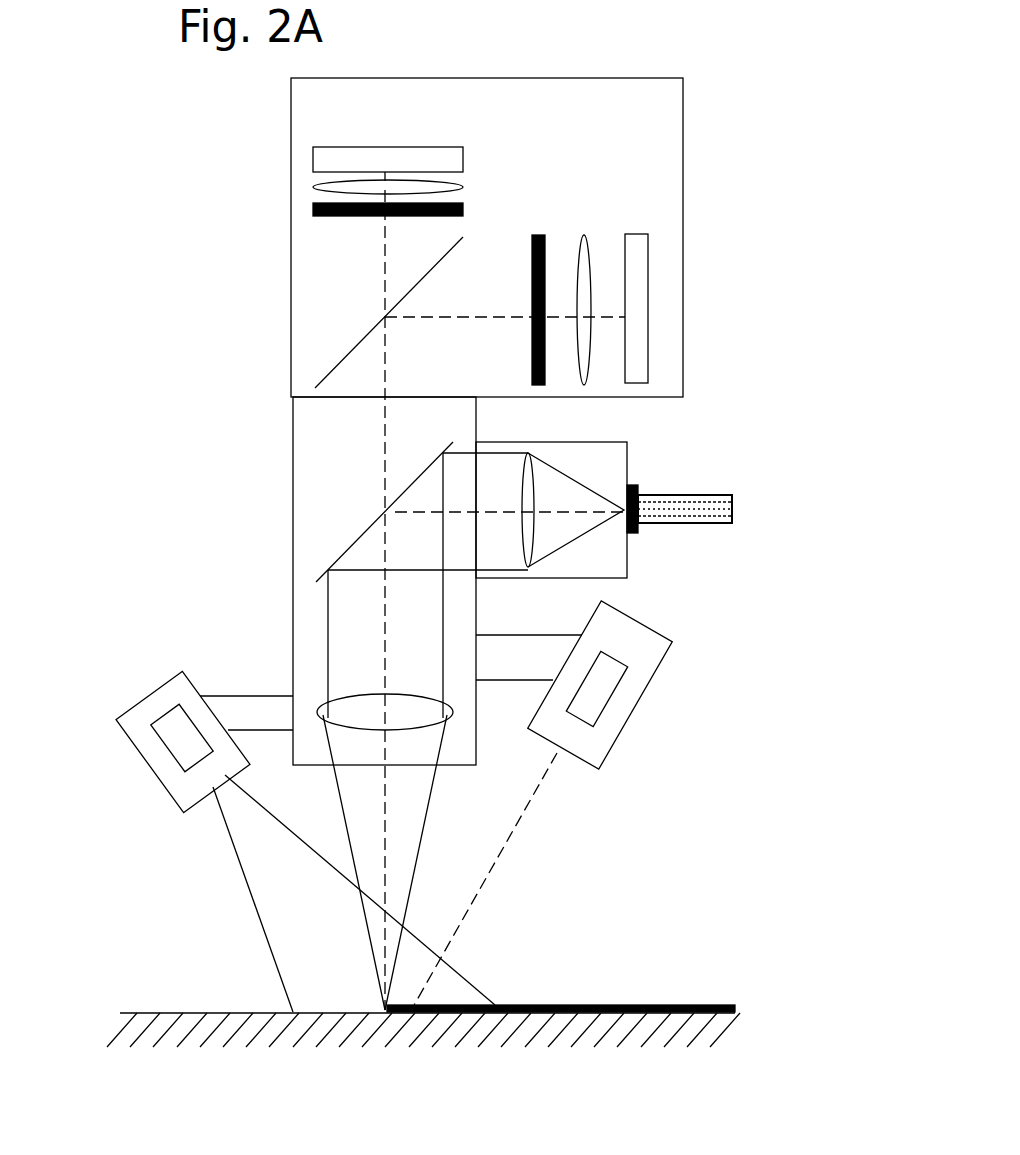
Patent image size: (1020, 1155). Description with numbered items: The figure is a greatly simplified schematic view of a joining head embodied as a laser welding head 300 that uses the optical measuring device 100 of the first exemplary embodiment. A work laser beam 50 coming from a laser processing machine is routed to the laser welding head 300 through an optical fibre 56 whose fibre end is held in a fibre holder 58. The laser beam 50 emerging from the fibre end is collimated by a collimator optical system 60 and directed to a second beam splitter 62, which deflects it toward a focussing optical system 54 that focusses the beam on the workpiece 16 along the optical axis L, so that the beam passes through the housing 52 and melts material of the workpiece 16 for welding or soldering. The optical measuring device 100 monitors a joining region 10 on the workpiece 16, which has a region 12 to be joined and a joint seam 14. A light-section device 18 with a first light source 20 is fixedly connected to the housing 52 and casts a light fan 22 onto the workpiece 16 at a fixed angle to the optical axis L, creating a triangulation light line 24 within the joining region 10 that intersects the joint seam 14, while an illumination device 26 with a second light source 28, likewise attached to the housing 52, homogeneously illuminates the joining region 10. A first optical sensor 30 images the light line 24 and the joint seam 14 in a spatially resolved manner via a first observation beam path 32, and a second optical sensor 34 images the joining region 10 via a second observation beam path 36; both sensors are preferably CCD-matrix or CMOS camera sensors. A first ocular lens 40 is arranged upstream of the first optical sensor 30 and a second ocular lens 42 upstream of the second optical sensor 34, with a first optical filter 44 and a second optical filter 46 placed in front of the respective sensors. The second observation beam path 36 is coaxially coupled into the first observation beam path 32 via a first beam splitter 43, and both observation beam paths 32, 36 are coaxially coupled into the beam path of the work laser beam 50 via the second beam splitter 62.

The joining region 10 is at (476, 944).
The region to be joined 12 is at (193, 1002).
The joint seam 14 is at (667, 1003).
The workpiece 16 is at (700, 1020).
The light-section device 18 is at (653, 640).
The first light source 20 is at (607, 685).
The light fan 22 is at (510, 838).
The triangulation light line 24 is at (417, 1003).
The illumination device 26 is at (148, 745).
The second light source 28 is at (172, 720).
The first optical sensor 30 is at (645, 268).
The first observation beam path 32 is at (495, 317).
The second optical sensor 34 is at (325, 158).
The second observation beam path 36 is at (383, 265).
The first ocular lens 40 is at (585, 245).
The second ocular lens 42 is at (463, 185).
The first beam splitter 43 is at (332, 368).
The first optical filter 44 is at (545, 235).
The second optical filter 46 is at (463, 210).
The work laser beam 50 is at (380, 945).
The housing 52 is at (293, 560).
The focussing optical system 54 is at (318, 715).
The optical fibre 56 is at (713, 498).
The fibre holder 58 is at (637, 485).
The collimator optical system 60 is at (530, 565).
The second beam splitter 62 is at (362, 530).
The optical measuring device 100 is at (703, 84).
The laser welding head 300 is at (210, 436).
The optical axis L is at (387, 793).